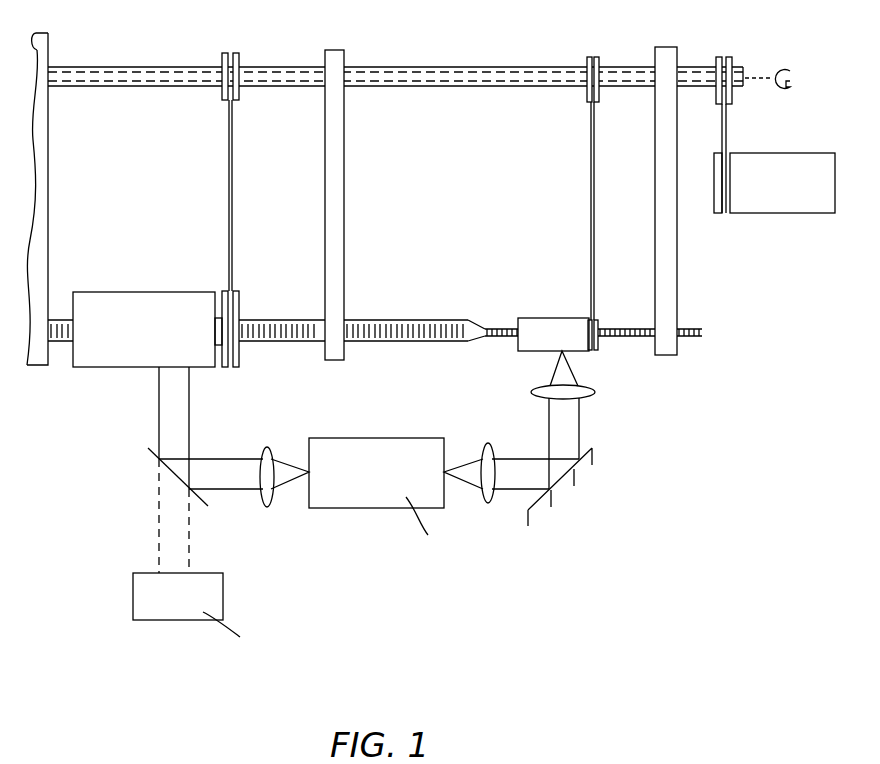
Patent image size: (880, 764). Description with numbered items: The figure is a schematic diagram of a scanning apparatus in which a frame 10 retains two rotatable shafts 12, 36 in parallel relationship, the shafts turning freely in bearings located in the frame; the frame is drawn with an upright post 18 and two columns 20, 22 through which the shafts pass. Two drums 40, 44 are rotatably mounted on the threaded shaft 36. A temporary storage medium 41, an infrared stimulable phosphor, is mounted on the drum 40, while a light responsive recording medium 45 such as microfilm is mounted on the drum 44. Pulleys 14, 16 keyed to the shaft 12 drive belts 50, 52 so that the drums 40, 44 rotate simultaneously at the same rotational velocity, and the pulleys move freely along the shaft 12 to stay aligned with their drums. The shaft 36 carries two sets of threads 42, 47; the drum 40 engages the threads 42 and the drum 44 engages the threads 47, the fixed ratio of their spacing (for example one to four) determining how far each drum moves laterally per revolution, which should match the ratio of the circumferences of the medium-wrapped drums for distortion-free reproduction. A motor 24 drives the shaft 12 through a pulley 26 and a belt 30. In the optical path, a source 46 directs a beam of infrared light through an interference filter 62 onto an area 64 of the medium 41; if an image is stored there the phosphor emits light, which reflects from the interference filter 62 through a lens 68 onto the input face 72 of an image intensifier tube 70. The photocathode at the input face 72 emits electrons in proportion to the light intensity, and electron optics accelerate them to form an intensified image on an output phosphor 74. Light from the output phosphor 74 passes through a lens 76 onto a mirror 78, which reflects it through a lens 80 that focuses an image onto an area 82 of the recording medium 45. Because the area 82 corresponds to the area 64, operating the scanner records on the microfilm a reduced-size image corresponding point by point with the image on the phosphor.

The frame 10 is at (50, 46).
The shaft 12 is at (455, 79).
The pulley 14 is at (237, 62).
The pulley 16 is at (594, 60).
The upright post 18 is at (62, 62).
The column 20 is at (348, 68).
The column 22 is at (681, 67).
The motor 24 is at (790, 158).
The pulley 26 is at (732, 60).
The belt 30 is at (727, 132).
The shaft 36 is at (60, 310).
The drum 40 is at (141, 327).
The temporary storage medium 41 is at (147, 300).
The threads 42 is at (272, 318).
The drum 44 is at (514, 322).
The light responsive recording medium 45 is at (548, 318).
The source 46 is at (223, 600).
The threads 47 is at (620, 328).
The belt 50 is at (235, 201).
The belt 52 is at (595, 206).
The interference filter 62 is at (146, 448).
The area 64 is at (178, 368).
The lens 68 is at (270, 505).
The image intensifier tube 70 is at (392, 505).
The input face 72 is at (307, 440).
The output phosphor 74 is at (446, 448).
The lens 76 is at (495, 450).
The mirror 78 is at (594, 455).
The lens 80 is at (585, 395).
The area 82 is at (575, 352).